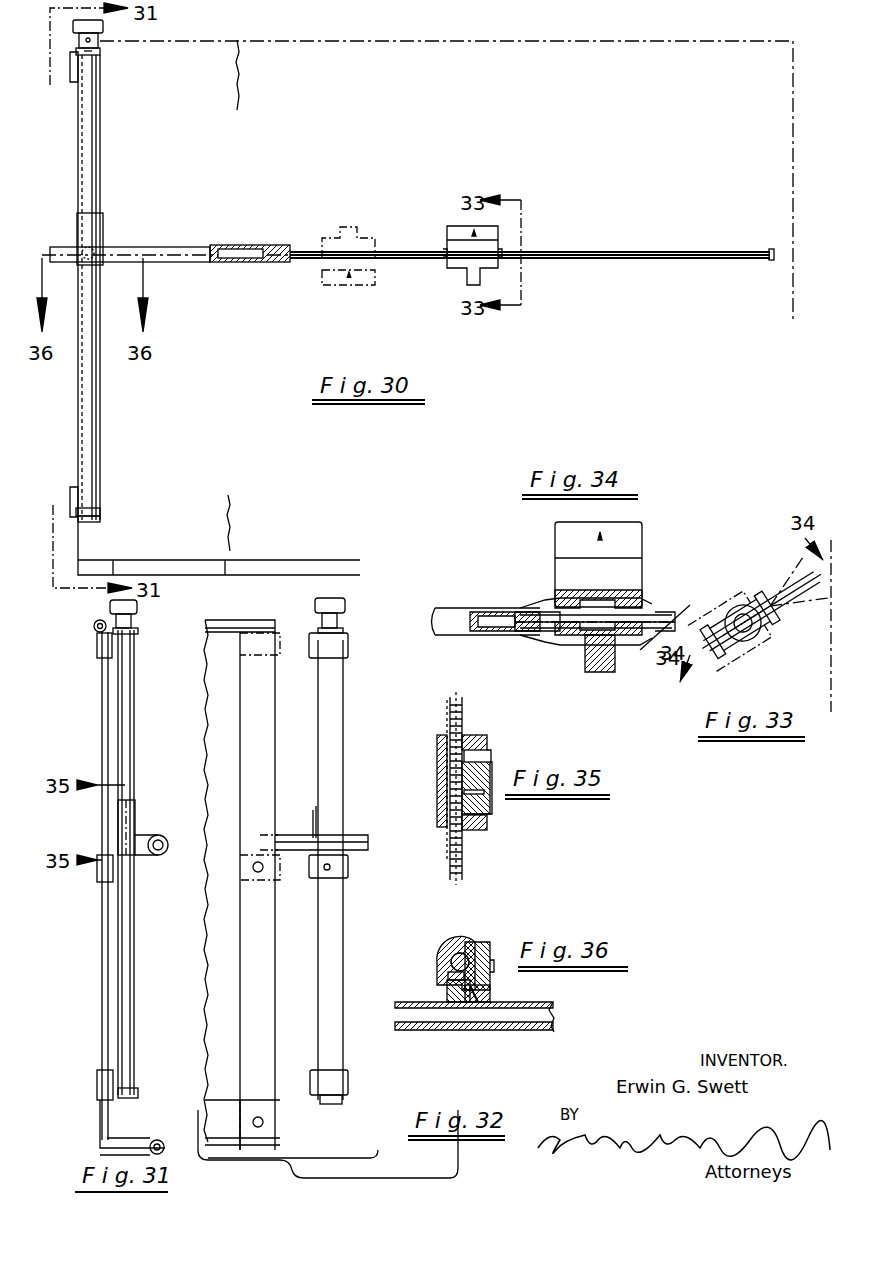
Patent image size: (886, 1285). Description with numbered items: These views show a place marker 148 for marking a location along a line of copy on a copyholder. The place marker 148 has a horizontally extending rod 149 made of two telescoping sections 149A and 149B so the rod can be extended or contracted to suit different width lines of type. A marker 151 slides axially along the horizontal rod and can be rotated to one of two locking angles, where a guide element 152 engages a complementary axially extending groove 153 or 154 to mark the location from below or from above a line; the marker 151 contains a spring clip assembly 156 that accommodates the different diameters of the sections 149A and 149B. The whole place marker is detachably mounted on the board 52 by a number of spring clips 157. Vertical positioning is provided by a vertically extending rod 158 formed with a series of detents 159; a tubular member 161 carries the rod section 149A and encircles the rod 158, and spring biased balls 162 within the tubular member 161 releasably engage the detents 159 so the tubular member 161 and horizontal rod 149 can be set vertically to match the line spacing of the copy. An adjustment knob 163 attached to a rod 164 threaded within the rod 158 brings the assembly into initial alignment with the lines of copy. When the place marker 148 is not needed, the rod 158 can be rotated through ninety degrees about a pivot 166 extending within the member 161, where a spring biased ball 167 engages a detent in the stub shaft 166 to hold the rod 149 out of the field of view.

In FIG. 30, the board 52 is at (505, 36).
In FIG. 31, the board 52 is at (105, 985).
In FIG. 32, the board 52 is at (238, 618).
In FIG. 30, the place marker 148 is at (176, 222).
In FIG. 31, the place marker 148 is at (154, 812).
In FIG. 30, the horizontally extending rod 149 is at (293, 268).
In FIG. 36, the horizontally extending rod 149 is at (482, 1030).
In FIG. 30, the rod section 149A is at (180, 262).
In FIG. 31, the rod section 149A is at (148, 860).
In FIG. 34, the rod section 149A is at (452, 618).
In FIG. 30, the rod section 149B is at (598, 262).
In FIG. 34, the rod section 149B is at (658, 612).
In FIG. 30, the marker 151 is at (446, 240).
In FIG. 34, the marker 151 is at (628, 565).
In FIG. 30, the guide element 152 is at (472, 255).
In FIG. 34, the guide element 152 is at (648, 572).
In FIG. 30, the axially extending groove 153 is at (676, 260).
In FIG. 34, the axially extending groove 153 is at (540, 605).
In FIG. 30, the axially extending groove 154 is at (668, 252).
In FIG. 34, the axially extending groove 154 is at (648, 650).
In FIG. 34, the spring clip assembly 156 is at (540, 642).
In FIG. 30, the spring clips 157 is at (68, 72).
In FIG. 31, the spring clips 157 is at (96, 645).
In FIG. 32, the spring clips 157 is at (328, 648).
In FIG. 30, the vertically extending rod 158 is at (86, 150).
In FIG. 31, the vertically extending rod 158 is at (134, 698).
In FIG. 32, the vertically extending rod 158 is at (321, 870).
In FIG. 35, the vertically extending rod 158 is at (450, 720).
In FIG. 36, the vertically extending rod 158 is at (452, 942).
In FIG. 35, the detents 159 is at (458, 735).
In FIG. 36, the detents 159 is at (468, 965).
In FIG. 31, the tubular member 161 is at (140, 890).
In FIG. 35, the tubular member 161 is at (436, 824).
In FIG. 36, the tubular member 161 is at (482, 942).
In FIG. 35, the spring biased balls 162 is at (470, 740).
In FIG. 30, the adjustment knob 163 is at (100, 25).
In FIG. 31, the adjustment knob 163 is at (137, 606).
In FIG. 32, the adjustment knob 163 is at (345, 606).
In FIG. 30, the rod 164 is at (100, 52).
In FIG. 31, the rod 164 is at (138, 632).
In FIG. 32, the rod 164 is at (330, 866).
In FIG. 35, the rod 164 is at (448, 868).
In FIG. 36, the rod 164 is at (448, 976).
In FIG. 30, the pivot 166 is at (100, 253).
In FIG. 31, the pivot 166 is at (126, 827).
In FIG. 36, the pivot 166 is at (448, 992).
In FIG. 36, the spring biased ball 167 is at (472, 1000).